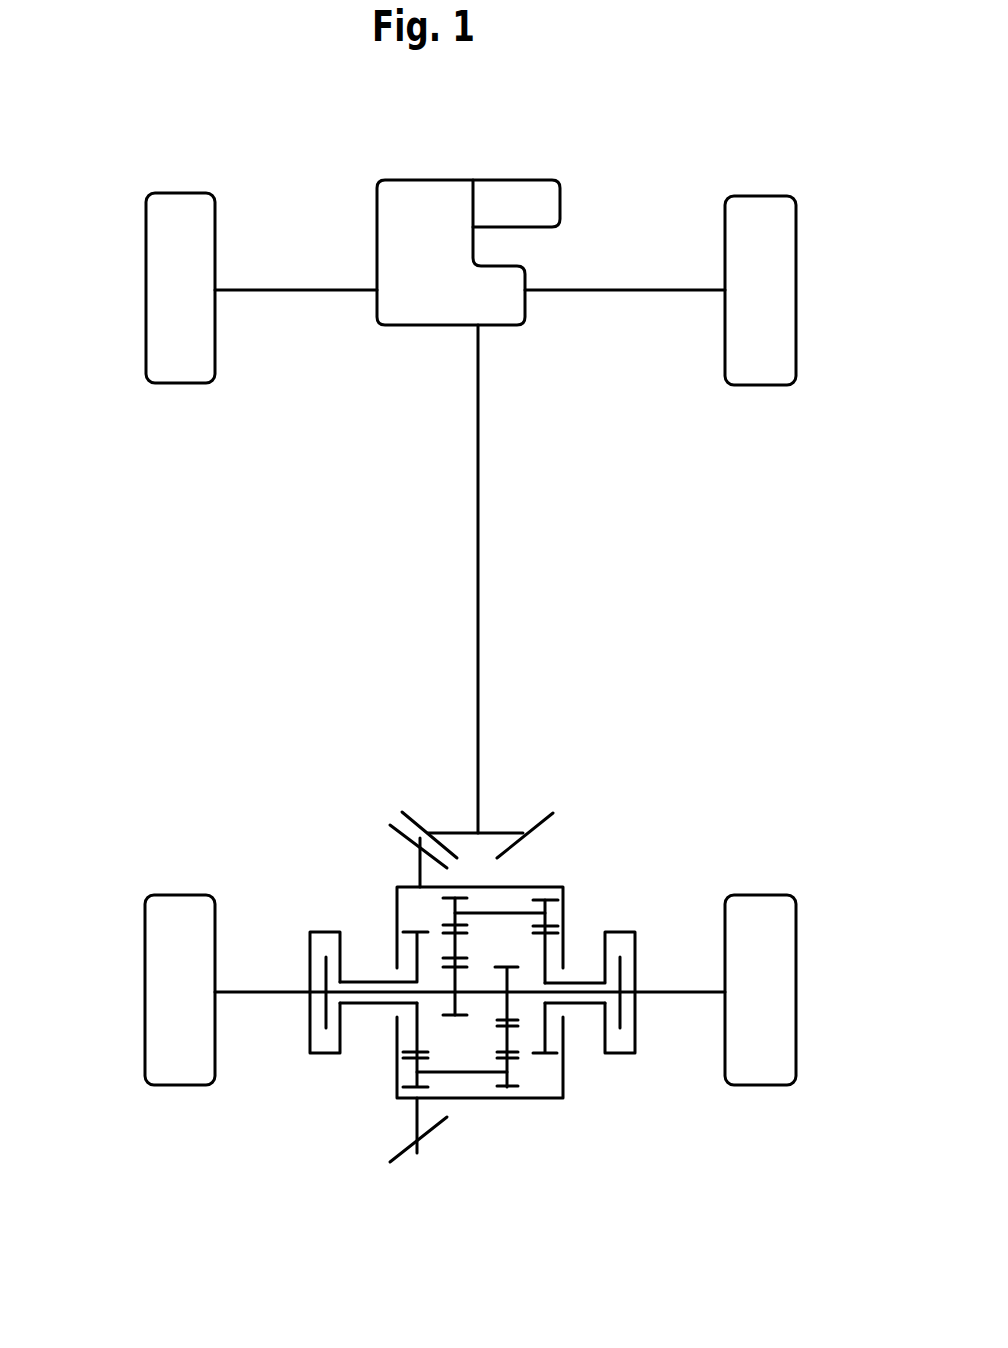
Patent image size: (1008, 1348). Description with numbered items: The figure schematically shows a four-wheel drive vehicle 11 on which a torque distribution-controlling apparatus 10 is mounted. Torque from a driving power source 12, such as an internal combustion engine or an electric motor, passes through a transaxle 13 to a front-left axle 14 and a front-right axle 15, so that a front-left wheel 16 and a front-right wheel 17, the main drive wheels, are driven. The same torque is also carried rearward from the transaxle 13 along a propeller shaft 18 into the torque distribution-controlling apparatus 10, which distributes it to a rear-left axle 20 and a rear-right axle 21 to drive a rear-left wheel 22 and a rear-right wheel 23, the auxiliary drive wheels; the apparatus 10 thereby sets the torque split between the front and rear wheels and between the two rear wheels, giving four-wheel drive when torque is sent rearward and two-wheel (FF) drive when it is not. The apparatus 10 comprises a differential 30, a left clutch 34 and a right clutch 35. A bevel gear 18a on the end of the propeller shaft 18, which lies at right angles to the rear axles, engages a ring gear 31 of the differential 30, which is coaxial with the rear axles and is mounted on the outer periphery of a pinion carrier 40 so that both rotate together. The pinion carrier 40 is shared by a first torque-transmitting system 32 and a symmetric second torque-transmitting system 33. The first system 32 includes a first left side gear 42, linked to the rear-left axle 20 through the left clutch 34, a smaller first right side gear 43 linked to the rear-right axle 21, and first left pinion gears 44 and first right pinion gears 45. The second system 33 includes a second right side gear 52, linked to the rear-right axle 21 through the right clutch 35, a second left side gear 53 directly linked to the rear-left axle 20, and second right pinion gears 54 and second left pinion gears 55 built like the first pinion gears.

The torque distribution-controlling apparatus 10 is at (538, 1259).
The four-wheel drive vehicle 11 is at (151, 180).
The driving power source 12 is at (553, 207).
The transaxle 13 is at (385, 220).
The front-left axle 14 is at (299, 288).
The front-right axle 15 is at (687, 288).
The front-left wheel 16 is at (160, 272).
The front-right wheel 17 is at (775, 292).
The propeller shaft 18 is at (480, 567).
The bevel gear 18a is at (423, 827).
The rear-left axle 20 is at (253, 990).
The rear-right axle 21 is at (683, 990).
The rear-left wheel 22 is at (155, 988).
The rear-right wheel 23 is at (778, 990).
The differential 30 is at (420, 1160).
The ring gear 31 is at (400, 827).
The first torque-transmitting system 32 is at (400, 1096).
The second torque-transmitting system 33 is at (568, 884).
The left clutch 34 is at (323, 1037).
The right clutch 35 is at (622, 1055).
The pinion carrier 40 is at (503, 884).
The first left side gear 42 is at (403, 1040).
The first right side gear 43 is at (500, 1003).
The first left pinion gears 44 is at (472, 1074).
The first right pinion gears 45 is at (508, 1046).
The second right side gear 52 is at (548, 1057).
The second left side gear 53 is at (457, 980).
The second right pinion gears 54 is at (563, 905).
The second left pinion gears 55 is at (453, 945).